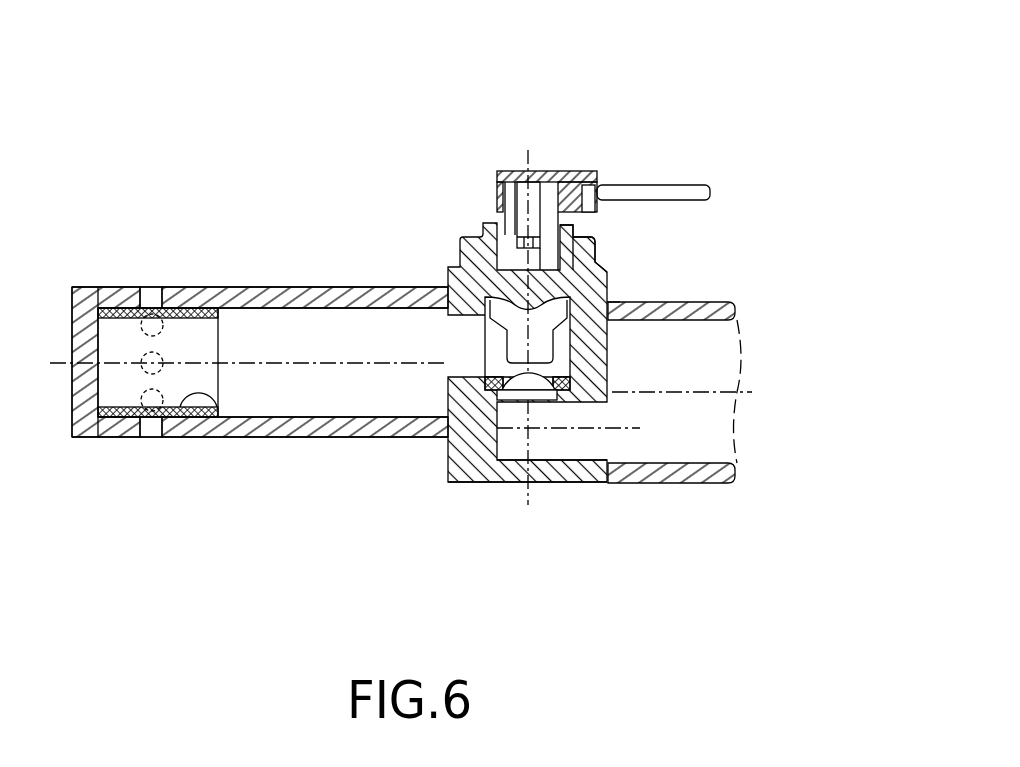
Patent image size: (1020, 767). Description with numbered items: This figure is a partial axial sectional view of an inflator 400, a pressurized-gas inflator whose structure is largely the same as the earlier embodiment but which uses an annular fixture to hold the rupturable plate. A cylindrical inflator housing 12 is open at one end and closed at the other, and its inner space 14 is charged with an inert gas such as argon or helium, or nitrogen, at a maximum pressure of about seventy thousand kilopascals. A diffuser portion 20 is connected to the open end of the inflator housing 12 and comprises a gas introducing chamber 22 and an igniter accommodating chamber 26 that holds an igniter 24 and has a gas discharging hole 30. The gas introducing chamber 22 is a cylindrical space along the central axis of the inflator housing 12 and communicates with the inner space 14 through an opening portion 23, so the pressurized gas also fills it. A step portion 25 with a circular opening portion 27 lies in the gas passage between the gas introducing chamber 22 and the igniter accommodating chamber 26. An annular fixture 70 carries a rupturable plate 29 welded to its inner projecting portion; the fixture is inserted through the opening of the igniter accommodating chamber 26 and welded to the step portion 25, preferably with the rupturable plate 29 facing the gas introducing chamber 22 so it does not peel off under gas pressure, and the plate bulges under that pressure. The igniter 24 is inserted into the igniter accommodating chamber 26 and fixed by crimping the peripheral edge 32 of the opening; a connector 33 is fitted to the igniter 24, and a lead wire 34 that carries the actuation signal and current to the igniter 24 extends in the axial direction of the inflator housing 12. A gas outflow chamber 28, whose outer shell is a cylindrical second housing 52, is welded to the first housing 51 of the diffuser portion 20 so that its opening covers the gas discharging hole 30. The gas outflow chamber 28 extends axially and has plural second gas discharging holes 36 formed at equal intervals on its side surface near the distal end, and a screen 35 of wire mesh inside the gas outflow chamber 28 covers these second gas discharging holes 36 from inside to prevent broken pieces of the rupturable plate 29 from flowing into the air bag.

The diffuser portion 20 is at (520, 147).
The second housing 52 is at (273, 260).
The gas outflow chamber 28 is at (310, 355).
The second gas discharging holes 36 is at (148, 287).
The screen 35 is at (183, 330).
The igniter 24 is at (465, 265).
The gas discharging hole 30 is at (462, 333).
The connector 33 is at (540, 173).
The lead wire 34 is at (687, 185).
The peripheral edge 32 is at (585, 242).
The rupturable plate 29 is at (608, 313).
The annular fixture 70 is at (608, 345).
The inner space 14 is at (707, 381).
The inflator housing 12 is at (703, 483).
The igniter accommodating chamber 26 is at (497, 357).
The step portion 25 is at (493, 392).
The circular opening portion 27 is at (545, 402).
The opening portion 23 is at (603, 443).
The gas introducing chamber 22 is at (508, 483).
The first housing 51 is at (465, 482).
The inflator 400 is at (423, 483).